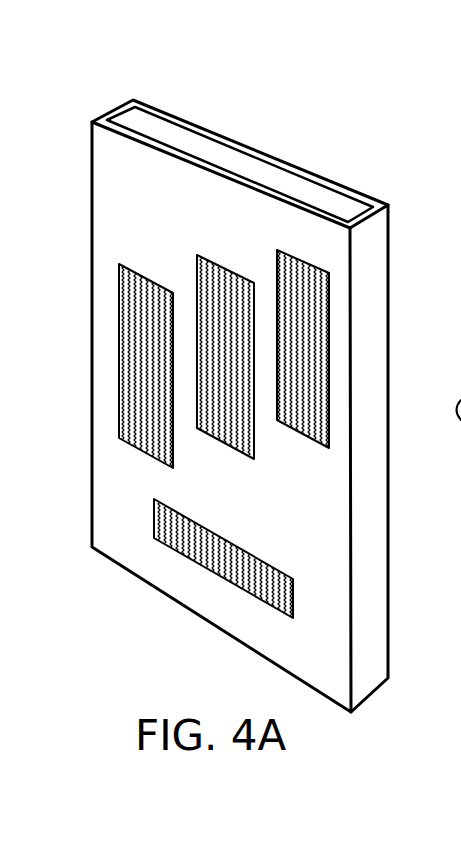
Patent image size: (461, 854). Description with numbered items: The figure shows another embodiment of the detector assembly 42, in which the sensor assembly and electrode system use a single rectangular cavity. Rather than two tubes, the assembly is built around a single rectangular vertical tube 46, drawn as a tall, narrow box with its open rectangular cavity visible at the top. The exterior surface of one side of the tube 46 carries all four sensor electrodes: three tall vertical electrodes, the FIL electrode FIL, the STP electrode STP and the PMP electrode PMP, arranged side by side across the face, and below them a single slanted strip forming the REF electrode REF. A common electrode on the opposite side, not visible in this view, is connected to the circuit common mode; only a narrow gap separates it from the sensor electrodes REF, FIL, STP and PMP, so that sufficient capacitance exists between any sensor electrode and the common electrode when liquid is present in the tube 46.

The detector assembly 42 is at (186, 83).
The rectangular vertical tube 46 is at (243, 162).
The FIL sensor electrode FIL is at (130, 297).
The STP sensor electrode STP is at (215, 275).
The PMP sensor electrode PMP is at (313, 312).
The REF sensor electrode REF is at (197, 553).